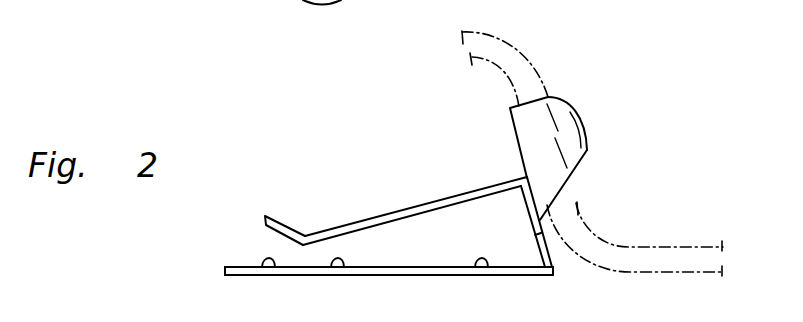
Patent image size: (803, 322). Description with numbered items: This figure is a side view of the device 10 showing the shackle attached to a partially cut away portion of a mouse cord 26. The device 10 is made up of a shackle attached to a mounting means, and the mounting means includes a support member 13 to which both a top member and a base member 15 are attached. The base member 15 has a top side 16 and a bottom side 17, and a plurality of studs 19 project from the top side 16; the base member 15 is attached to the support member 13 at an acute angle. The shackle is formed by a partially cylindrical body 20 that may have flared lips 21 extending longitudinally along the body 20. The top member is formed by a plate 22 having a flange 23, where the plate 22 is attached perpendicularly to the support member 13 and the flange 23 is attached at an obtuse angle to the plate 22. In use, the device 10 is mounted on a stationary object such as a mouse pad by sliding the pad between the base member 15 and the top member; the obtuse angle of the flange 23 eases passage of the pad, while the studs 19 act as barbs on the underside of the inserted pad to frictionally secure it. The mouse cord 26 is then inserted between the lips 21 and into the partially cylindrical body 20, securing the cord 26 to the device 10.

The device 10 is at (394, 152).
The support member 13 is at (550, 258).
The base member 15 is at (224, 270).
The top side 16 is at (417, 267).
The bottom side 17 is at (412, 276).
The studs 19 is at (328, 260).
The partially cylindrical body 20 is at (510, 123).
The flared lips 21 is at (577, 109).
The plate 22 is at (377, 215).
The flange 23 is at (283, 222).
The mouse cord 26 is at (580, 208).